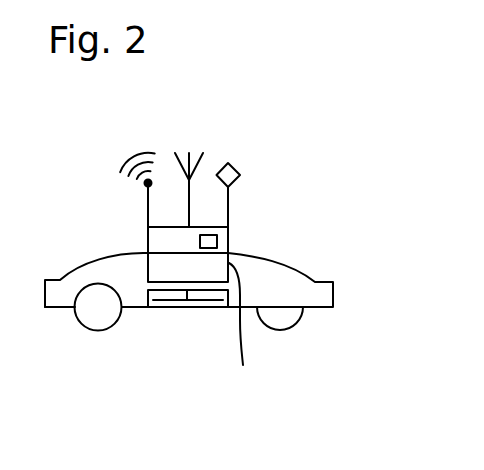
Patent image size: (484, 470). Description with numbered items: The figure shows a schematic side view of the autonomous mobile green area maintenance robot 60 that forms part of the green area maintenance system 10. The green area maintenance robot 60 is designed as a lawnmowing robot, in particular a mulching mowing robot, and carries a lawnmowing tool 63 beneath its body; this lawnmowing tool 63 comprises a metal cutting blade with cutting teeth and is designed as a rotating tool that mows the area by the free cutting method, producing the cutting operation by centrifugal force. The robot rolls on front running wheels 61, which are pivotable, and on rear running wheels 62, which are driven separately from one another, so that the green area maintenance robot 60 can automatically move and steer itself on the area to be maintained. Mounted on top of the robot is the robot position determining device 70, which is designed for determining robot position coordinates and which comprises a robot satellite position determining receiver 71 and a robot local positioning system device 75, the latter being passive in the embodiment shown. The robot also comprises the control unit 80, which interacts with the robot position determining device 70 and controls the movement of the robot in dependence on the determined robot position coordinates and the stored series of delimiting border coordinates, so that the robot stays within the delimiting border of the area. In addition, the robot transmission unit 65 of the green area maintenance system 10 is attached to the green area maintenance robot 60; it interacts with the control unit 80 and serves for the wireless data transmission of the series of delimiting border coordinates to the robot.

The green area maintenance system 10 is at (86, 140).
The autonomous mobile green area maintenance robot 60 is at (292, 267).
The front running wheels 61 is at (288, 315).
The rear running wheels 62 is at (87, 315).
The lawnmowing tool 63 is at (175, 305).
The robot transmission unit 65 is at (192, 208).
The robot position determining device 70 is at (148, 242).
The robot satellite position determining receiver 71 is at (148, 205).
The robot local positioning system device 75 is at (228, 200).
The control unit 80 is at (244, 327).